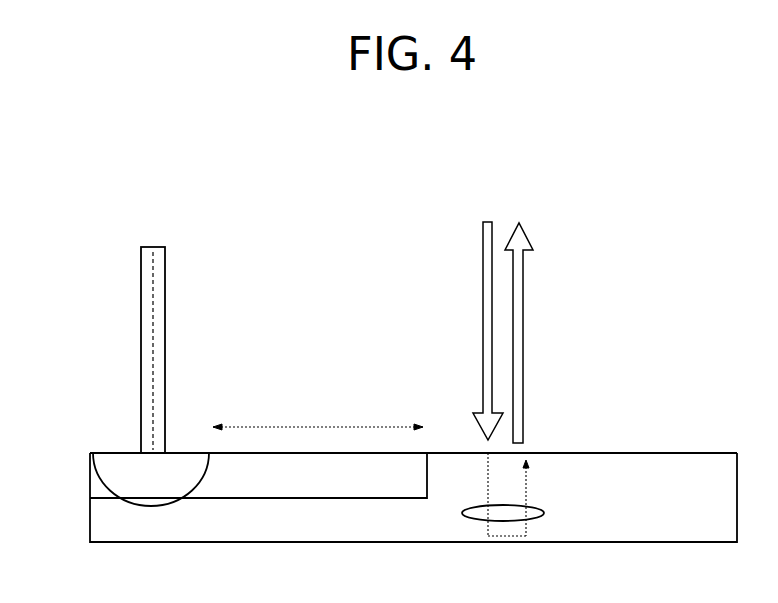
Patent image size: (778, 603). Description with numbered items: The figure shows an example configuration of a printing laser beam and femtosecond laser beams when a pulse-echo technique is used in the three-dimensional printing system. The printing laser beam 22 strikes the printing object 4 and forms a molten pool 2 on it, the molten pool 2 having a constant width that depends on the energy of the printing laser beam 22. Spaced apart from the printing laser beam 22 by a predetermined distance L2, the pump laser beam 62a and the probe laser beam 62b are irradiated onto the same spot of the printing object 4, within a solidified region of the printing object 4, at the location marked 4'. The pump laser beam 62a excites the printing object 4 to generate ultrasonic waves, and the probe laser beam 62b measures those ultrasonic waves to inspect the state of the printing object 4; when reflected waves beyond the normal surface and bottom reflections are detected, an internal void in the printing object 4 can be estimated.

The printing laser beam 22 is at (141, 316).
The molten pool 2 is at (103, 462).
The printing object 4 is at (384, 497).
The region within base plate 4' is at (500, 521).
The pump laser beam 62a is at (483, 285).
The probe laser beam 62b is at (523, 285).
The predetermined distance L2 is at (318, 416).